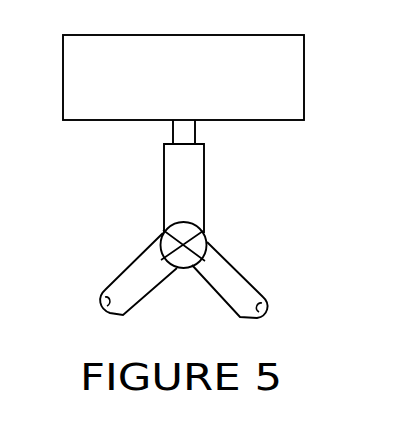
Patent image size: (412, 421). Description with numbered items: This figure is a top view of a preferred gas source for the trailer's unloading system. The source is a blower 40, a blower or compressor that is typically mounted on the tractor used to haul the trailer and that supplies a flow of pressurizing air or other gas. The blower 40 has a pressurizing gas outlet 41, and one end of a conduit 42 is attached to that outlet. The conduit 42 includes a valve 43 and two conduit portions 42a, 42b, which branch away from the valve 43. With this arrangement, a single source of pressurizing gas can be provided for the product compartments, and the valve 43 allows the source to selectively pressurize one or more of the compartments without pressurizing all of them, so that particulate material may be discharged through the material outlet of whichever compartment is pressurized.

The blower 40 is at (270, 70).
The pressurizing gas outlet 41 is at (199, 131).
The conduit 42 is at (195, 177).
The conduit portion 42a is at (130, 278).
The conduit portion 42b is at (235, 280).
The valve 43 is at (152, 223).